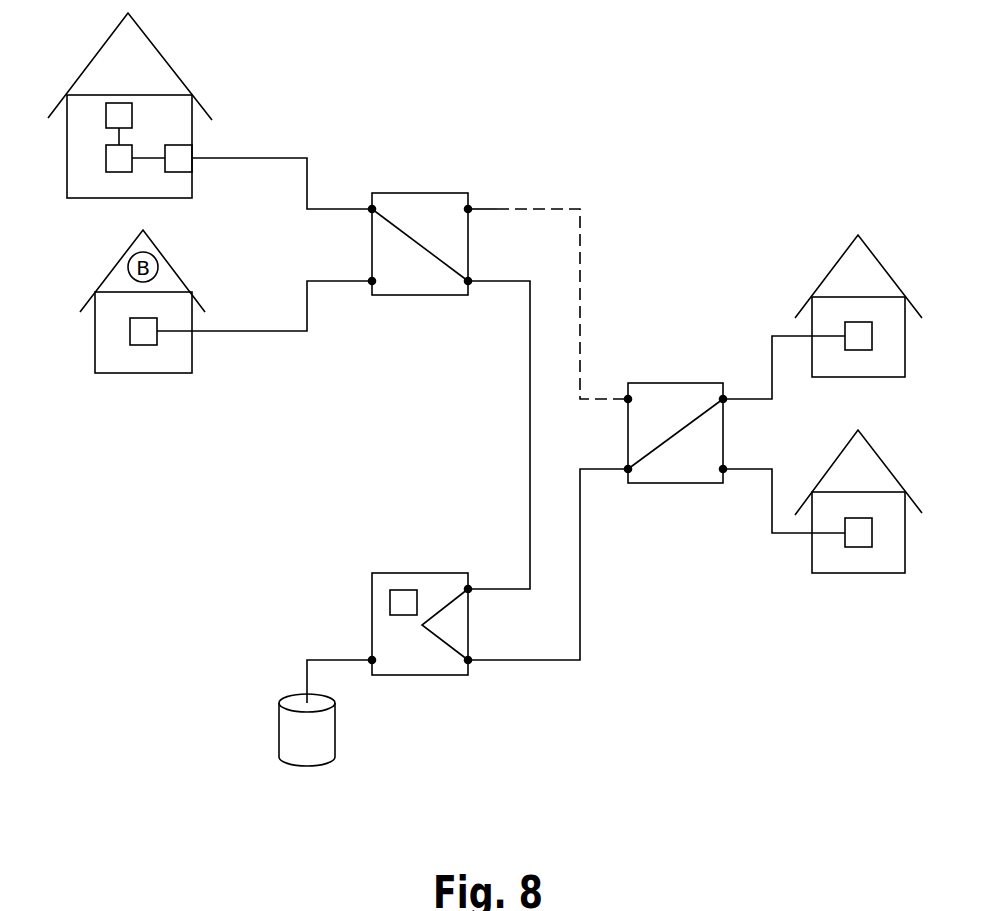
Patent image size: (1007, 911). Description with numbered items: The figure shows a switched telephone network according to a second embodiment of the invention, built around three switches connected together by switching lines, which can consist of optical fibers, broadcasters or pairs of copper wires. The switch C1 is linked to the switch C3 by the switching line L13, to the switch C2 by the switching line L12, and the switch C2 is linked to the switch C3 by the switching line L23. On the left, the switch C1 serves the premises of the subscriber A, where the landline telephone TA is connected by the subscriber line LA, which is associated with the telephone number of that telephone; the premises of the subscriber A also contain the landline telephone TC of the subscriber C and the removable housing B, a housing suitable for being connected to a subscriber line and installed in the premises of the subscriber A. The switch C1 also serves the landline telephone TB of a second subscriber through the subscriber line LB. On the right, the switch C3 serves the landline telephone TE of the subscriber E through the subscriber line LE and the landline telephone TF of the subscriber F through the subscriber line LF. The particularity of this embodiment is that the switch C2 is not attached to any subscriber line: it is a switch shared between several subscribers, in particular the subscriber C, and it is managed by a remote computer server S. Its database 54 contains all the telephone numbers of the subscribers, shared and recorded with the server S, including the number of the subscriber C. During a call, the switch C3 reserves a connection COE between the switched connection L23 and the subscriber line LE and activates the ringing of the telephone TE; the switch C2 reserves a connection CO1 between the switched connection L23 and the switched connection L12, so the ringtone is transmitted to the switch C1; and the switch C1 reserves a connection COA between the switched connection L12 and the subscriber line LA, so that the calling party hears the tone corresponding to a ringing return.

The subscriber A is at (130, 105).
The landline telephone TC is at (106, 118).
The landline telephone TA is at (106, 158).
The removable housing B is at (192, 162).
The subscriber line LA is at (258, 158).
The switch C1 is at (420, 193).
The connection COA is at (425, 246).
The switching line L13 is at (510, 209).
The switching line L12 is at (497, 281).
The landline telephone TB is at (130, 331).
The subscriber line LB is at (228, 332).
The switch C3 is at (655, 383).
The connection COE is at (678, 437).
The subscriber line LE is at (772, 372).
The subscriber line LF is at (772, 500).
The switching line L23 is at (555, 660).
The subscriber E is at (858, 306).
The landline telephone TE is at (856, 352).
The subscriber F is at (858, 501).
The landline telephone TF is at (858, 547).
The switch C2 is at (412, 573).
The connection CO1 is at (440, 648).
The database 54 is at (390, 604).
The remote computer server S is at (285, 742).